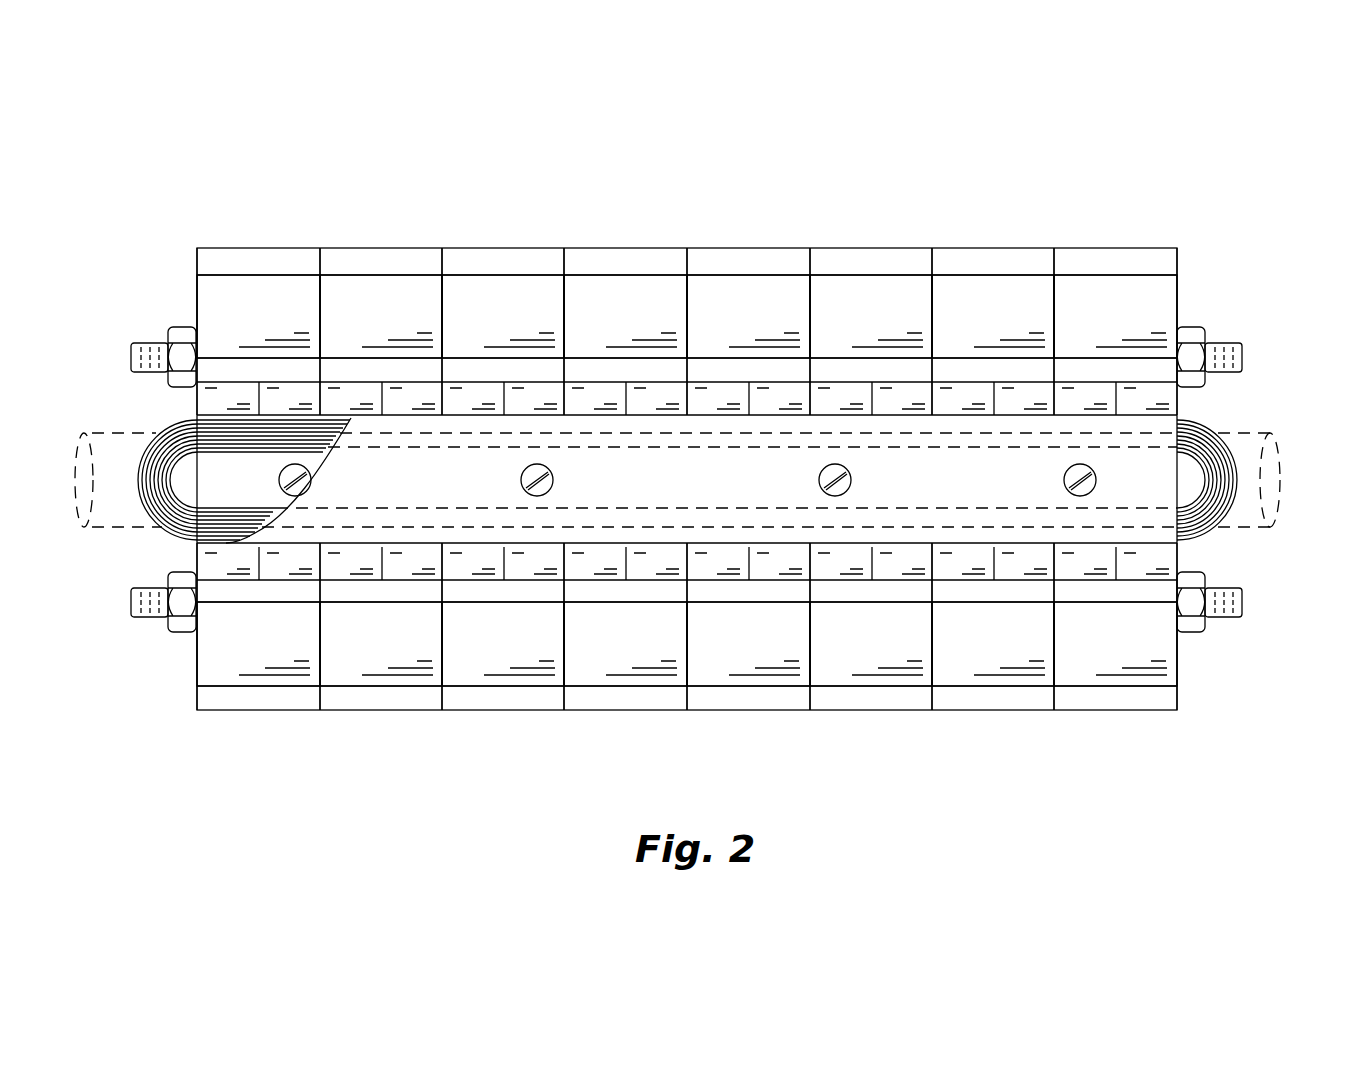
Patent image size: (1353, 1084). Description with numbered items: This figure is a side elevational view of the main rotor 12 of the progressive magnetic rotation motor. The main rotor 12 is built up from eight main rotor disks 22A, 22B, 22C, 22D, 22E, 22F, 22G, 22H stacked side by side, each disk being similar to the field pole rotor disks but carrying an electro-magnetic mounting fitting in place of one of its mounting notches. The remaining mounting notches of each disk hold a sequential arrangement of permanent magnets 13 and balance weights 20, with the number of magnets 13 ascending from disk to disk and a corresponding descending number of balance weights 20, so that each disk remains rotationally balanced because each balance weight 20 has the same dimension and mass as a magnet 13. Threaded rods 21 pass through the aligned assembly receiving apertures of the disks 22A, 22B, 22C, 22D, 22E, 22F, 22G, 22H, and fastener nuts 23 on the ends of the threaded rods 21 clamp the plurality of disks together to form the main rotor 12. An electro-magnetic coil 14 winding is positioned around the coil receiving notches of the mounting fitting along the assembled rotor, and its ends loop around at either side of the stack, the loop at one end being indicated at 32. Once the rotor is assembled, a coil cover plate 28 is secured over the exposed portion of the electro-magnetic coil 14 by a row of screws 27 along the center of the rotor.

The main rotor 12 is at (1181, 246).
The permanent magnet 13 is at (1013, 323).
The electro-magnetic coil 14 is at (160, 432).
The balance weight 20 is at (1095, 323).
The threaded rod 21 is at (151, 342).
The first main rotor disk 22A is at (233, 246).
The second main rotor disk 22B is at (354, 246).
The third main rotor disk 22C is at (481, 246).
The fourth main rotor disk 22D is at (603, 246).
The fifth main rotor disk 22E is at (726, 246).
The sixth main rotor disk 22F is at (850, 246).
The seventh main rotor disk 22G is at (969, 246).
The eighth main rotor disk 22H is at (1085, 246).
The fastener nut 23 is at (178, 325).
The screw 27 is at (312, 477).
The coil cover plate 28 is at (715, 497).
The strap loop end 32 is at (1250, 432).